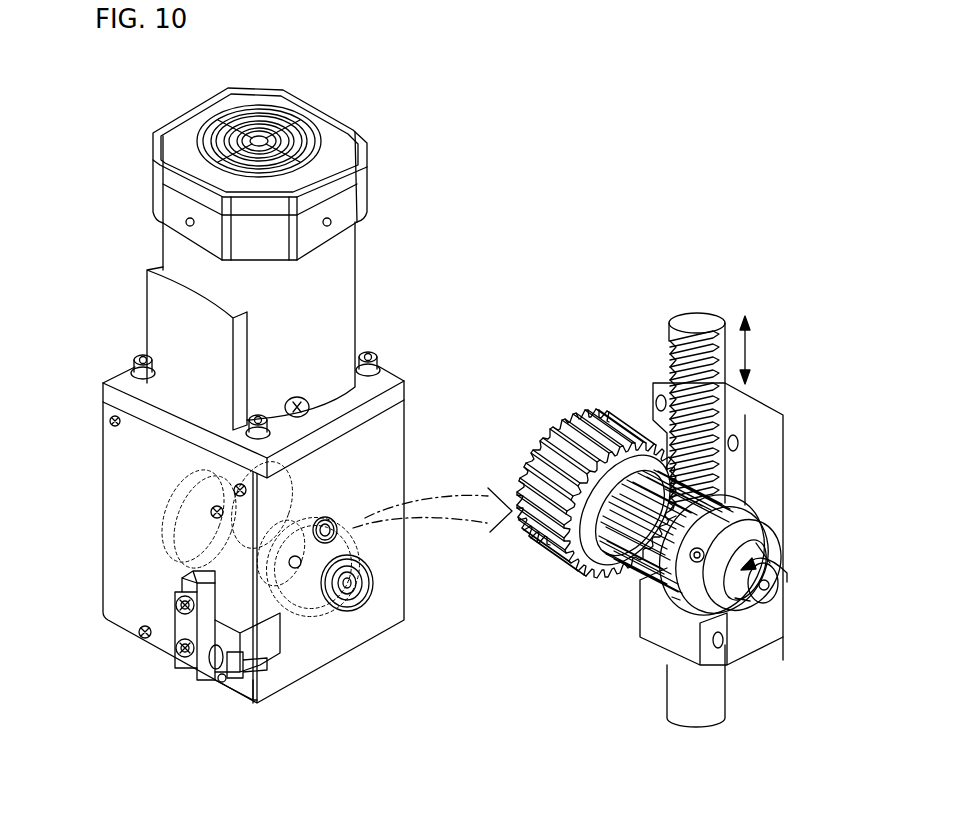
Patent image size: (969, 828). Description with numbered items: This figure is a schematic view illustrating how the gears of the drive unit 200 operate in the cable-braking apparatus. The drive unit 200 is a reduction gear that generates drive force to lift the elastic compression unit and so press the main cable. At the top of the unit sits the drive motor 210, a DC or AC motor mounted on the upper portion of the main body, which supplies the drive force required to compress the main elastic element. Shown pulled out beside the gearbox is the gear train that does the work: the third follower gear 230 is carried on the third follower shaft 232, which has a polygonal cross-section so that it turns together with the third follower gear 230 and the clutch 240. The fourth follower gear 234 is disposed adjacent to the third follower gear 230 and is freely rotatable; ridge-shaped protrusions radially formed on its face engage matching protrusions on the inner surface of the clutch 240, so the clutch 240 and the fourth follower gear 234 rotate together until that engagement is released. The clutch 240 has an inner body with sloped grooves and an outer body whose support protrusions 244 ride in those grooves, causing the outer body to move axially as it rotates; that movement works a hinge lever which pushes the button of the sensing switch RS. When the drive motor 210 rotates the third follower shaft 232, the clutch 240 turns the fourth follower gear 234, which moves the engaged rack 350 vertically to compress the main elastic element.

The drive unit 200 is at (373, 259).
The drive motor 210 is at (178, 252).
The sensing switch RS is at (200, 660).
The rack 350 is at (672, 340).
The third follower gear 230 is at (545, 460).
The fourth follower gear 234 is at (583, 557).
The support protrusions 244 is at (760, 540).
The third follower shaft 232 is at (773, 588).
The clutch 240 is at (668, 611).